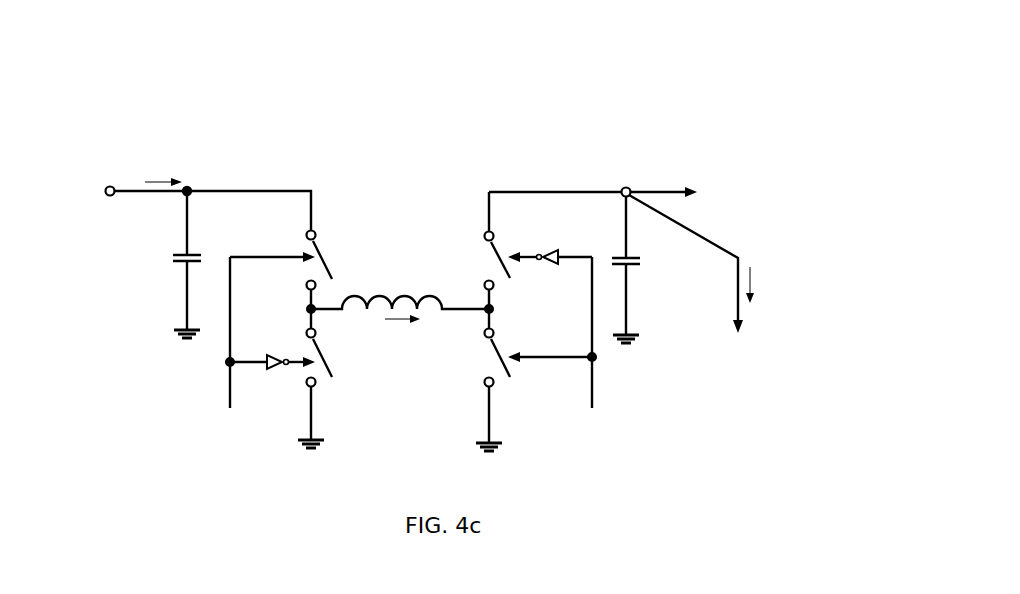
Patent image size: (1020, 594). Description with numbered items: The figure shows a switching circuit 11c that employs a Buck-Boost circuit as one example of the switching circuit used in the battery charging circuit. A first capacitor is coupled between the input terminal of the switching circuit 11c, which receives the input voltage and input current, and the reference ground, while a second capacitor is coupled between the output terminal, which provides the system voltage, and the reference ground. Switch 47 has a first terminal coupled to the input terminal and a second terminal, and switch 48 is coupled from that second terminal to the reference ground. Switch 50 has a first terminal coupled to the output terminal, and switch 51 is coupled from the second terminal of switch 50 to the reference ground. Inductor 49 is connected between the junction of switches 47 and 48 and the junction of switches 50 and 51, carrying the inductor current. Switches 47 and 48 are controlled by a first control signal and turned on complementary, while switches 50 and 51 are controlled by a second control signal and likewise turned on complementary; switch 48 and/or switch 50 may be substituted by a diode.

The switching circuit 11c is at (705, 90).
The switch 47 is at (329, 263).
The switch 48 is at (330, 365).
The inductor 49 is at (388, 295).
The switch 50 is at (500, 258).
The switch 51 is at (500, 358).